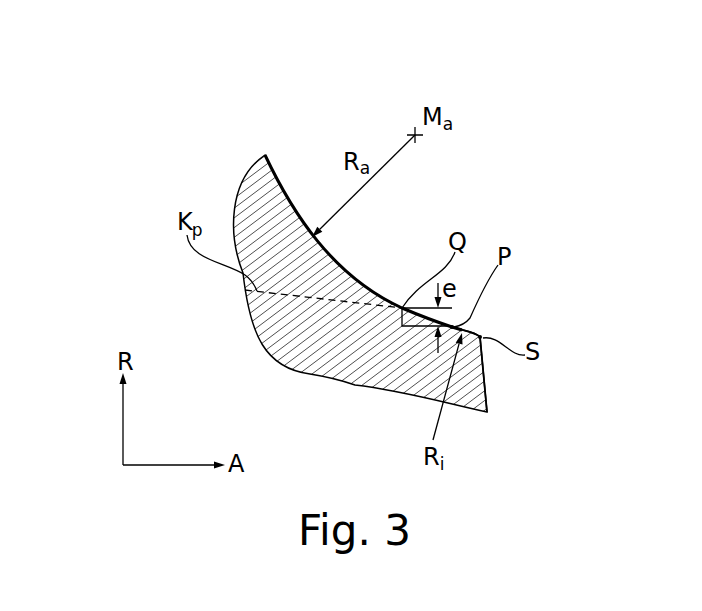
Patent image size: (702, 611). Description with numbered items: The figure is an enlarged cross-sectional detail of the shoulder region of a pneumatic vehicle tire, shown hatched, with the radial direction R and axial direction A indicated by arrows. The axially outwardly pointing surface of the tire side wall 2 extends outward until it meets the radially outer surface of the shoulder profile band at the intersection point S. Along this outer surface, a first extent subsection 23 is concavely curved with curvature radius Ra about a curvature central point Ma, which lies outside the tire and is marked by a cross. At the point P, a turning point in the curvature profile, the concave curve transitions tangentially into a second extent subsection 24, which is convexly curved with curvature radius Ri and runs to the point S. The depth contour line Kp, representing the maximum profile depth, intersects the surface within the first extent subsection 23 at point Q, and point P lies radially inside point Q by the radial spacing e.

The tire side wall 2 is at (482, 395).
The first extent subsection 23 is at (284, 190).
The second extent subsection 24 is at (465, 332).